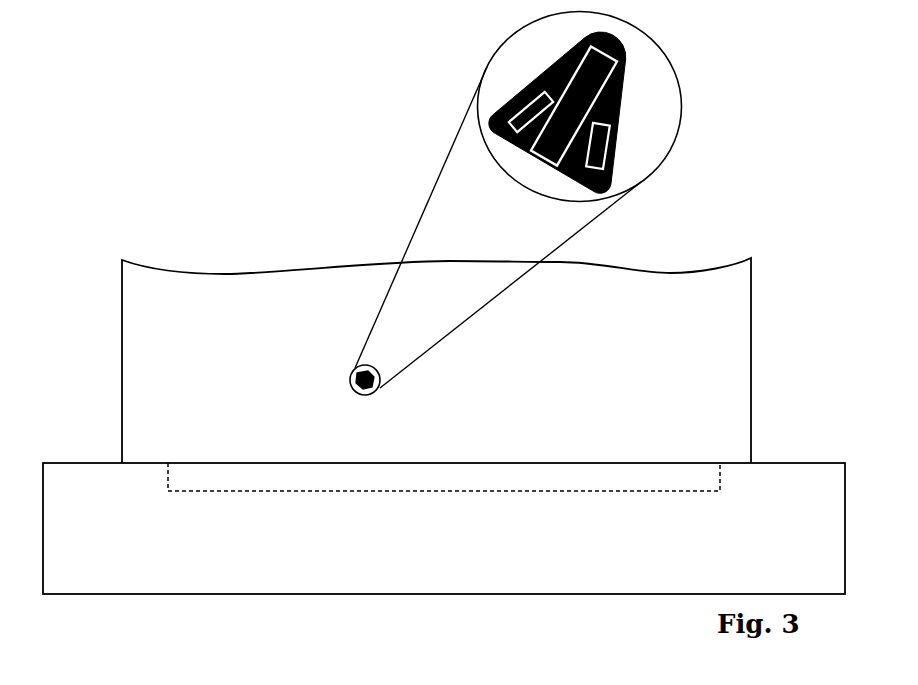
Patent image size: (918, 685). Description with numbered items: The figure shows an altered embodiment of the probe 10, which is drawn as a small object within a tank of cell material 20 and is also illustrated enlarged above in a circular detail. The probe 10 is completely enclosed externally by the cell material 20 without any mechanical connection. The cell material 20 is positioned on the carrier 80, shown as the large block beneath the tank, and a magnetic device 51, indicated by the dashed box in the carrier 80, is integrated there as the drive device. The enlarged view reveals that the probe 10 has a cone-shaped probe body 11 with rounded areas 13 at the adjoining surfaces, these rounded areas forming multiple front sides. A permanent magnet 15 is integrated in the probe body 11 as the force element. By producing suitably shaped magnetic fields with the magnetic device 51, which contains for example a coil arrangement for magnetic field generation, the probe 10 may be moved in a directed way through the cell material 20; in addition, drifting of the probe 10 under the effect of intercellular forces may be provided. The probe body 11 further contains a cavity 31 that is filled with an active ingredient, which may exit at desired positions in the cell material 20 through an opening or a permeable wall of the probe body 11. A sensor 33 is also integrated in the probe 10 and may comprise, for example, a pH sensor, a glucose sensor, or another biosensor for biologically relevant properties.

The probe 10 is at (307, 389).
The probe body 11 is at (622, 98).
The rounded areas 13 is at (625, 43).
The permanent magnet 15 is at (527, 150).
The cell material 20 is at (700, 316).
The cavity 31 is at (613, 147).
The sensor 33 is at (516, 107).
The magnetic device 51 is at (687, 484).
The carrier 80 is at (779, 489).